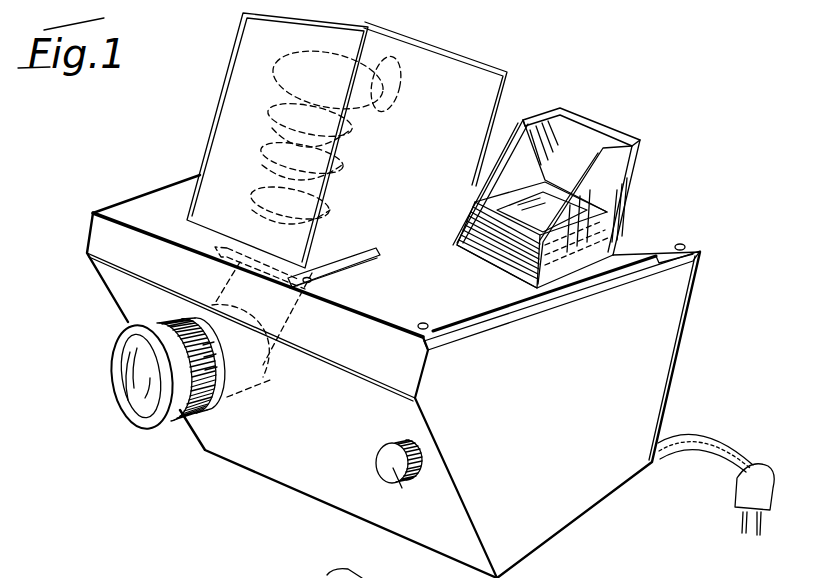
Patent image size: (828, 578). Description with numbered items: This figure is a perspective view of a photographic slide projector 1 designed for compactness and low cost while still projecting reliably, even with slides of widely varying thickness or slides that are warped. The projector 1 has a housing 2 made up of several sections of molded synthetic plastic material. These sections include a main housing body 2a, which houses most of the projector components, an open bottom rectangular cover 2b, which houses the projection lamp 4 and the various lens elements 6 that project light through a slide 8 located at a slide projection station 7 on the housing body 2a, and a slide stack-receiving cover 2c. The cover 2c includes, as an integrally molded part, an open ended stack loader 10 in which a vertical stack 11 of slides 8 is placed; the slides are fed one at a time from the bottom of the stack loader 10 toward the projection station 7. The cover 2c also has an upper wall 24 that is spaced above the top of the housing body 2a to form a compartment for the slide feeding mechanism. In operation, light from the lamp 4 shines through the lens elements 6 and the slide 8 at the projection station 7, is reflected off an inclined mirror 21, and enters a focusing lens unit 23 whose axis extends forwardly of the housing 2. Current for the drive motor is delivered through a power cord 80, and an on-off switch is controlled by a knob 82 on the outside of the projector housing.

The photographic slide projector 1 is at (97, 155).
The housing 2 is at (707, 302).
The main housing body 2a is at (669, 409).
The open bottom rectangular cover 2b is at (478, 60).
The slide stack-receiving cover 2c is at (520, 317).
The projection lamp 4 is at (275, 62).
The lens elements 6 is at (280, 115).
The slide projection station 7 is at (200, 273).
The slide 8 is at (347, 240).
The stack loader 10 is at (645, 172).
The stack 11 is at (466, 263).
The inclined mirror 21 is at (285, 357).
The focusing lens unit 23 is at (115, 337).
The upper wall 24 is at (425, 235).
The power cord 80 is at (727, 453).
The knob 82 is at (403, 476).